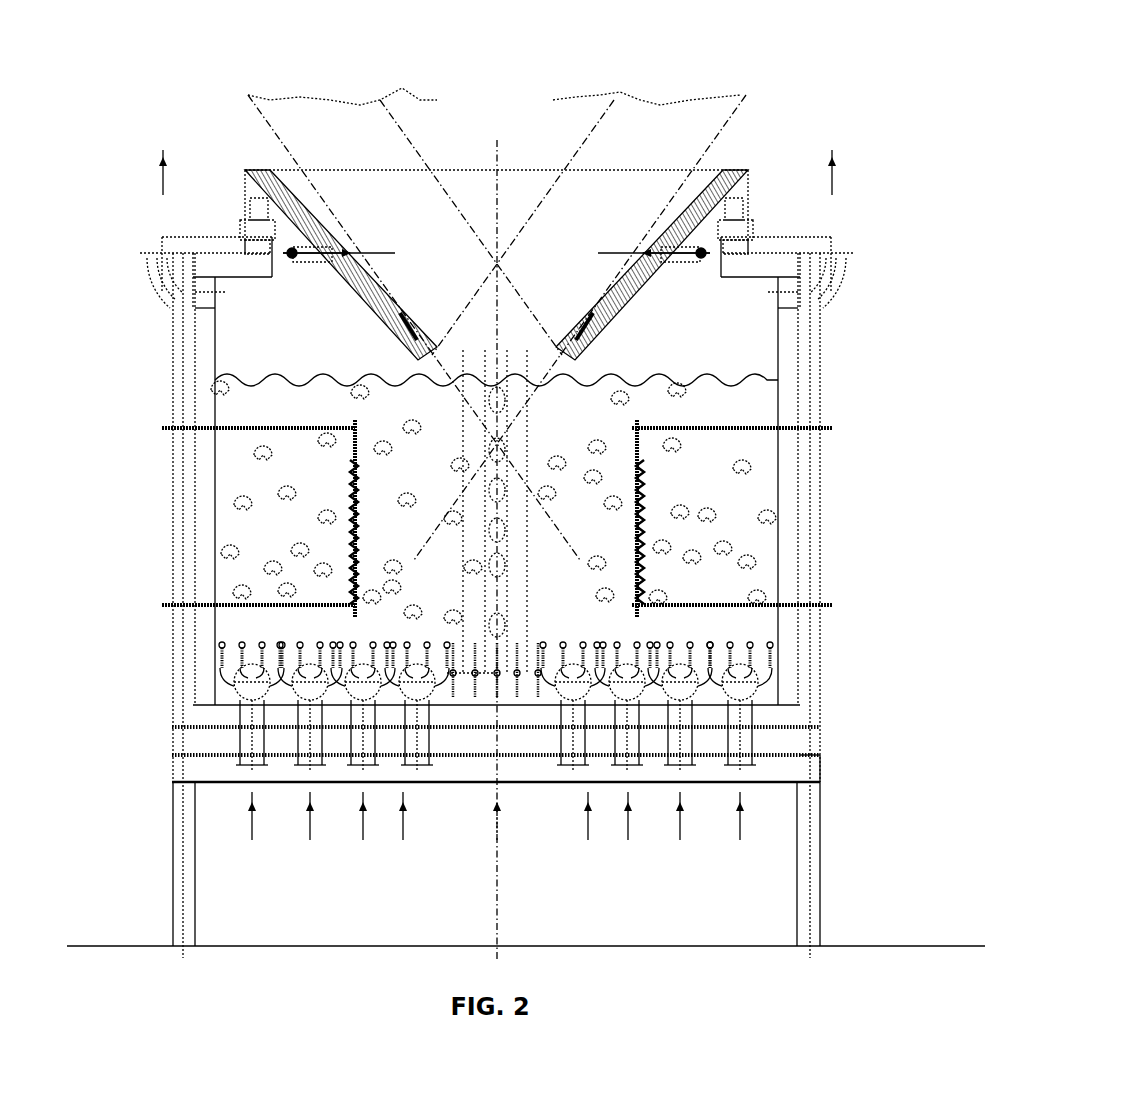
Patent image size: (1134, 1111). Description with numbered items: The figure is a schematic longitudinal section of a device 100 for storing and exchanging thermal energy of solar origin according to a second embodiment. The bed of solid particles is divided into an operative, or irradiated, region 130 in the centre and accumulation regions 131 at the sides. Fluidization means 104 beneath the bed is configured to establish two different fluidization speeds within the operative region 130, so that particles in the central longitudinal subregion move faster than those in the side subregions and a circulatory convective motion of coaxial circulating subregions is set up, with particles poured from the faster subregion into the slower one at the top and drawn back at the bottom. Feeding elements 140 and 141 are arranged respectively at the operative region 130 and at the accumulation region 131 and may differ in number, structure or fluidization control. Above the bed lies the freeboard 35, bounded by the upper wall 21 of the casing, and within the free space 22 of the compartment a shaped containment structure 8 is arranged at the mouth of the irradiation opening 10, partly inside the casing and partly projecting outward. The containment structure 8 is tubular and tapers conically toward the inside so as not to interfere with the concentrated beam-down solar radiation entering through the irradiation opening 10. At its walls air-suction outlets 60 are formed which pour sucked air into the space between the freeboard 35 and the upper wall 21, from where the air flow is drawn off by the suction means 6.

The device 100 is at (778, 82).
The irradiation opening 10 is at (412, 240).
The containment structure 8 is at (746, 168).
The upper wall 21 is at (222, 236).
The suction means 6 is at (150, 292).
The air-suction outlets 60 is at (318, 263).
The freeboard 35 is at (272, 380).
The free space 22 is at (655, 341).
The accumulation region 131 is at (244, 546).
The operative region 130 is at (532, 607).
The fluidization means 104 is at (236, 733).
The feeding element 140 is at (455, 678).
The feeding element 141 is at (753, 735).